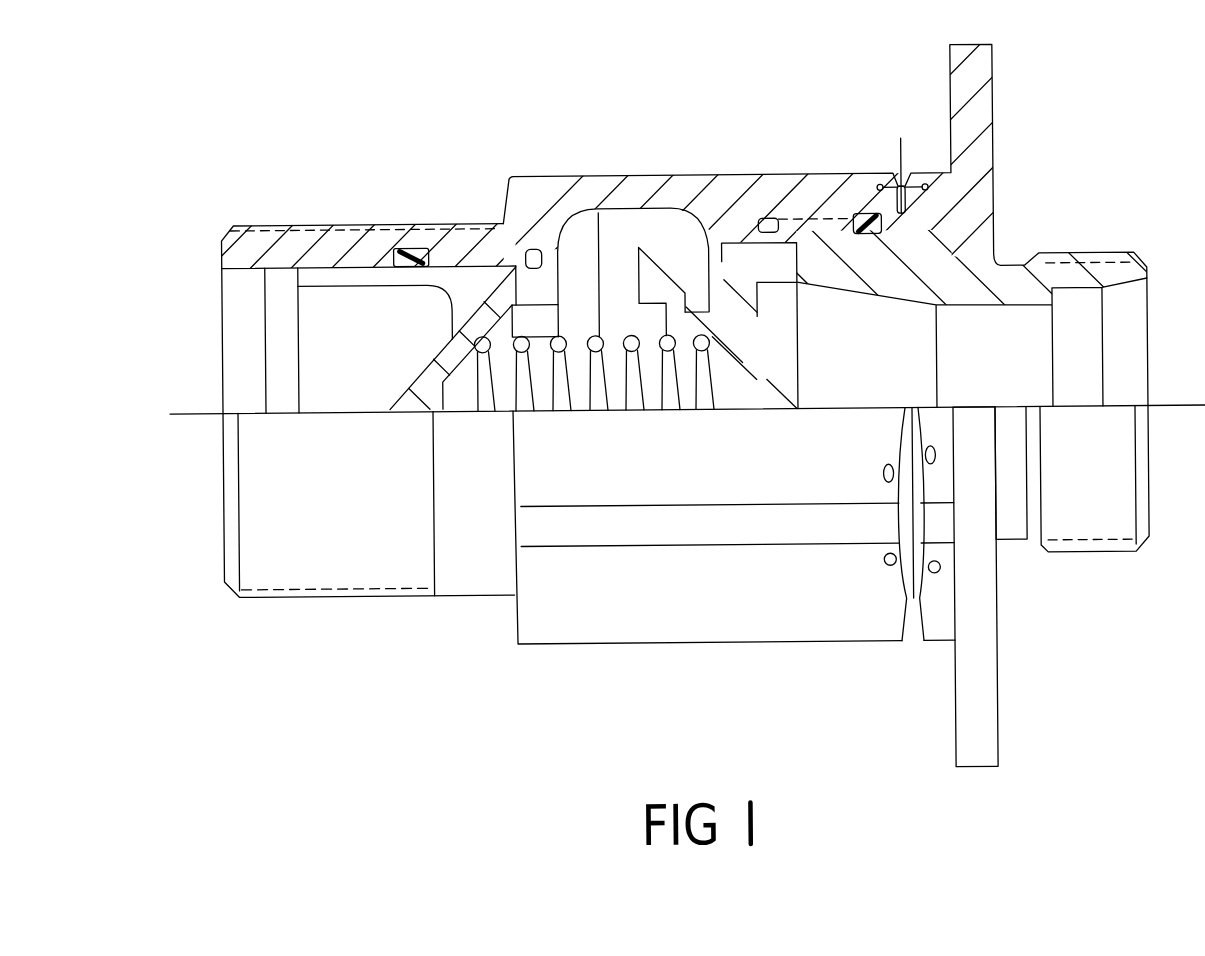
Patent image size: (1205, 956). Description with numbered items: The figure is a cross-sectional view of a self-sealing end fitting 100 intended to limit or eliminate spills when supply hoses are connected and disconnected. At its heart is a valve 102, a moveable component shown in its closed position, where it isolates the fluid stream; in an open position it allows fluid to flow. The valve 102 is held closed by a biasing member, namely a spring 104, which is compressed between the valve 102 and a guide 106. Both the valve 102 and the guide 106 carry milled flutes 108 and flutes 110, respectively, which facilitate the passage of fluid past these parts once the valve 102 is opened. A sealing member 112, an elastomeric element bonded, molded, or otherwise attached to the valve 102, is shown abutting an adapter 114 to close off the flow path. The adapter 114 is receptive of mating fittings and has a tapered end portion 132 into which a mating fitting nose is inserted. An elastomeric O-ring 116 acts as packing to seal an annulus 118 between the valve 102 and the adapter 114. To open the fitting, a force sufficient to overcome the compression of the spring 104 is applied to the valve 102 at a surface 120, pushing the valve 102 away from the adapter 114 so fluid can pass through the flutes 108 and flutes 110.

The self-sealing end fitting 100 is at (1088, 105).
The valve 102 is at (560, 240).
The spring 104 is at (684, 322).
The guide 106 is at (714, 305).
The flutes 108 is at (446, 303).
The flutes 110 is at (738, 292).
The sealing member 112 is at (530, 246).
The adapter 114 is at (490, 228).
The O-ring 116 is at (378, 222).
The annulus 118 is at (342, 222).
The surface 120 is at (298, 281).
The tapered end portion 132 is at (282, 264).